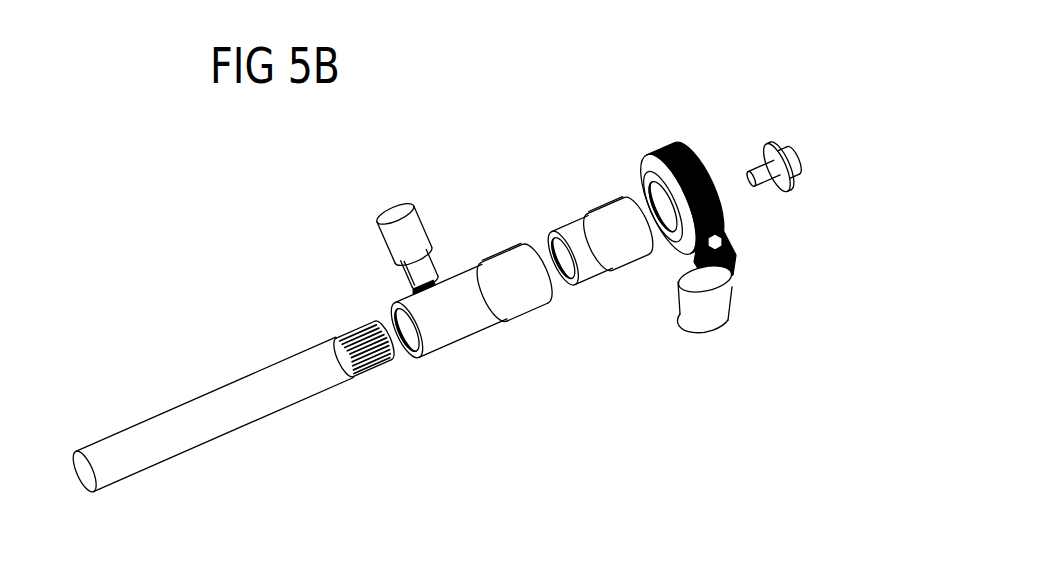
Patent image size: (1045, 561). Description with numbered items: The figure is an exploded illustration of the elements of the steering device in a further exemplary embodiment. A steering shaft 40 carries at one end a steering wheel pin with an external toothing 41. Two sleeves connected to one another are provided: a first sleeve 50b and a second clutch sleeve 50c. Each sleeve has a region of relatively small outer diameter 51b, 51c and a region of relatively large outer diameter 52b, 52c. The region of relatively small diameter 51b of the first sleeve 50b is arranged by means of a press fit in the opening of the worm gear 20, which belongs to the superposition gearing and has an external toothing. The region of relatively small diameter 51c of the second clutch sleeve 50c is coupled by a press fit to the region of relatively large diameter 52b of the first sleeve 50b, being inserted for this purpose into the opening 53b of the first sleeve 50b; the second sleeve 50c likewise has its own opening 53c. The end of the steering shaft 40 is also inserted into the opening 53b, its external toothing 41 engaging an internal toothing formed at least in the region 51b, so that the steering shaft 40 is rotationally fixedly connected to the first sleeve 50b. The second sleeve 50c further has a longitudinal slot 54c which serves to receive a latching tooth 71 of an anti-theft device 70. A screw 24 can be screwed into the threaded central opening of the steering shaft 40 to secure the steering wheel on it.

The worm gear 20 is at (678, 156).
The screw 24 is at (792, 153).
The steering shaft 40 is at (237, 429).
The external toothing 41 is at (372, 374).
The first sleeve 50b is at (612, 287).
The region of relatively small outer diameter 51b is at (608, 203).
The region of relatively large outer diameter 52b is at (570, 216).
The opening 53b is at (550, 230).
The second clutch sleeve 50c is at (483, 339).
The region of relatively small outer diameter 51c is at (530, 311).
The region of relatively large outer diameter 52c is at (445, 351).
The opening 53c is at (410, 348).
The longitudinal slot 54c is at (413, 292).
The anti-theft device 70 is at (417, 228).
The latching tooth 71 is at (426, 266).